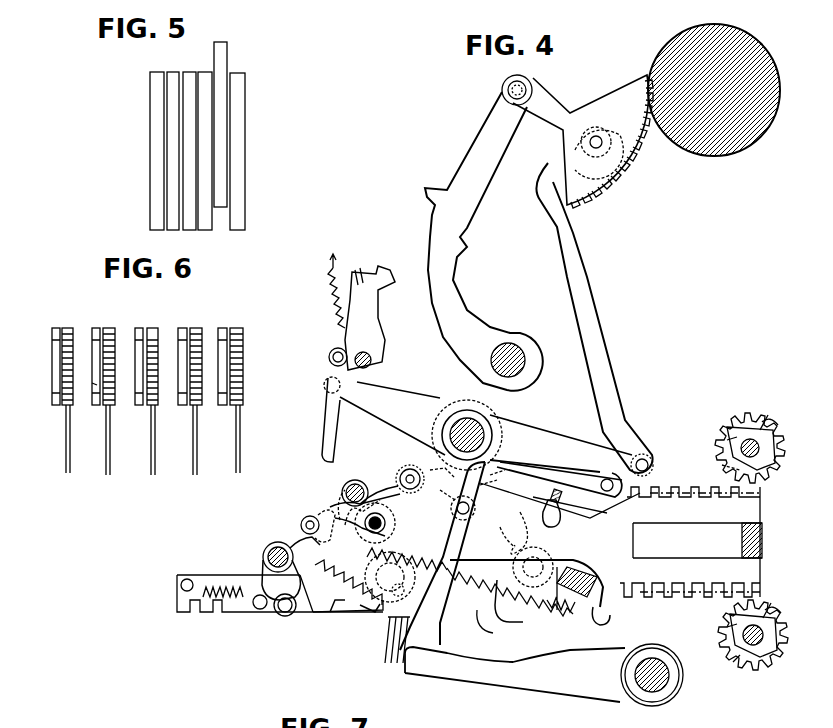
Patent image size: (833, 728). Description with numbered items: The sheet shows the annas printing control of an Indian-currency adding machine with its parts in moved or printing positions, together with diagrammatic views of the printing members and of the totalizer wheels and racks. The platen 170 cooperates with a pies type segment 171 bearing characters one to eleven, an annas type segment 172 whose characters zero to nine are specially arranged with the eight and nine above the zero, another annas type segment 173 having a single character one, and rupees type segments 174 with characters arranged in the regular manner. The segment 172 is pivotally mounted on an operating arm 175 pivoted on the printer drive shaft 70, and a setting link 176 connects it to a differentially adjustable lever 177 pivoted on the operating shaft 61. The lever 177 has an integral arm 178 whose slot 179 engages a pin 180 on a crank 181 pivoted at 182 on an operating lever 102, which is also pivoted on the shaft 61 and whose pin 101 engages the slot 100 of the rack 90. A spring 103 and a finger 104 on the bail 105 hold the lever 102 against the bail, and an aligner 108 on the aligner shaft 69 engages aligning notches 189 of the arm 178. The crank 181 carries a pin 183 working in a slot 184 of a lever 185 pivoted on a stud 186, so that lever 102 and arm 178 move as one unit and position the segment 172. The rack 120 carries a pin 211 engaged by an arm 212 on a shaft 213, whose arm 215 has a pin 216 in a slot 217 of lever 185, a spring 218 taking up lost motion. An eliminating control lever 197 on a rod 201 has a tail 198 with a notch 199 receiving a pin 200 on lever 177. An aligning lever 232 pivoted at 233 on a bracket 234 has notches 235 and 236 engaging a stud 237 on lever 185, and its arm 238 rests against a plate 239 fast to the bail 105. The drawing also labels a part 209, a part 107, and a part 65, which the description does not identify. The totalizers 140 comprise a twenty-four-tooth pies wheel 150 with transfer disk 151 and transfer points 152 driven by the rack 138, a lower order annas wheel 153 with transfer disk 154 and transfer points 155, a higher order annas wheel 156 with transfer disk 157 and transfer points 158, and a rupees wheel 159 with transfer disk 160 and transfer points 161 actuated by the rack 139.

In FIG. 5, the rupees type segments 174 is at (187, 72).
In FIG. 5, the annas type segment 173 is at (205, 72).
In FIG. 5, the annas type segment 172 is at (227, 50).
In FIG. 4, the annas type segment 172 is at (620, 88).
In FIG. 5, the pies type segment 171 is at (243, 78).
In FIG. 6, the rupees wheel 159 is at (55, 328).
In FIG. 6, the transfer points 161 is at (68, 328).
In FIG. 6, the transfer disk 160 is at (92, 383).
In FIG. 6, the rack 139 is at (70, 470).
In FIG. 6, the rack 120 is at (108, 472).
In FIG. 4, the rack 120 is at (241, 578).
In FIG. 6, the transfer disk 157 is at (135, 385).
In FIG. 6, the transfer points 158 is at (145, 365).
In FIG. 6, the annas wheel 156 is at (152, 328).
In FIG. 6, the rack 90 is at (153, 470).
In FIG. 4, the rack 90 is at (318, 614).
In FIG. 6, the transfer disk 154 is at (180, 385).
In FIG. 4, the transfer disk 154 is at (725, 462).
In FIG. 6, the transfer points 155 is at (180, 328).
In FIG. 6, the annas wheel 153 is at (195, 328).
In FIG. 4, the annas wheel 153 is at (737, 420).
In FIG. 6, the transfer disk 151 is at (220, 385).
In FIG. 4, the transfer disk 151 is at (775, 425).
In FIG. 6, the transfer points 152 is at (222, 328).
In FIG. 4, the transfer points 152 is at (762, 420).
In FIG. 6, the wheel 150 is at (245, 323).
In FIG. 4, the wheel 150 is at (727, 427).
In FIG. 6, the rack 138 is at (238, 466).
In FIG. 4, the platen 170 is at (685, 156).
In FIG. 4, the operating arm 175 is at (465, 156).
In FIG. 4, the setting link 176 is at (567, 260).
In FIG. 4, the printer drive shaft 70 is at (492, 352).
In FIG. 4, the shaft 61 is at (453, 420).
In FIG. 4, the lever 177 is at (533, 445).
In FIG. 4, the bracket 234 is at (641, 459).
In FIG. 4, the notch 235 is at (530, 476).
In FIG. 4, the lever 232 is at (600, 485).
In FIG. 4, the tail 198 is at (326, 407).
In FIG. 4, the notch 199 is at (327, 384).
In FIG. 4, the pin 200 is at (329, 357).
In FIG. 4, the eliminating control lever 197 is at (368, 298).
In FIG. 4, the rod 201 is at (368, 356).
In FIG. 4, the spring 209 is at (332, 296).
In FIG. 4, the stud 186 is at (346, 487).
In FIG. 4, the pivot 182 is at (406, 470).
In FIG. 4, the slot 179 is at (388, 528).
In FIG. 4, the pin 180 is at (360, 522).
In FIG. 4, the crank 181 is at (400, 497).
In FIG. 4, the lever 185 is at (372, 485).
In FIG. 4, the slot 184 is at (455, 466).
In FIG. 4, the pin 183 is at (492, 472).
In FIG. 4, the arm 178 is at (463, 520).
In FIG. 4, the notch 236 is at (547, 500).
In FIG. 4, the stud 237 is at (517, 546).
In FIG. 4, the pivot 233 is at (500, 565).
In FIG. 4, the operating lever 102 is at (445, 628).
In FIG. 4, the aligner shaft 69 is at (662, 692).
In FIG. 4, the aligner 108 is at (390, 647).
In FIG. 4, the spring 103 is at (510, 601).
In FIG. 4, the arm 238 is at (493, 633).
In FIG. 4, the plate 239 is at (565, 616).
In FIG. 4, the finger 104 is at (597, 603).
In FIG. 4, the bail 105 is at (600, 626).
In FIG. 4, the rack 107 is at (683, 520).
In FIG. 4, the block 65 is at (742, 543).
In FIG. 4, the totalizers 140 is at (739, 371).
In FIG. 4, the spring 218 is at (205, 583).
In FIG. 4, the shaft 213 is at (265, 553).
In FIG. 4, the arm 215 is at (285, 545).
In FIG. 4, the pin 216 is at (301, 522).
In FIG. 4, the slot 217 is at (318, 515).
In FIG. 4, the arm 212 is at (256, 610).
In FIG. 4, the pin 211 is at (281, 614).
In FIG. 4, the aligning notches 189 is at (333, 618).
In FIG. 4, the pin 101 is at (368, 614).
In FIG. 4, the slot 100 is at (395, 583).